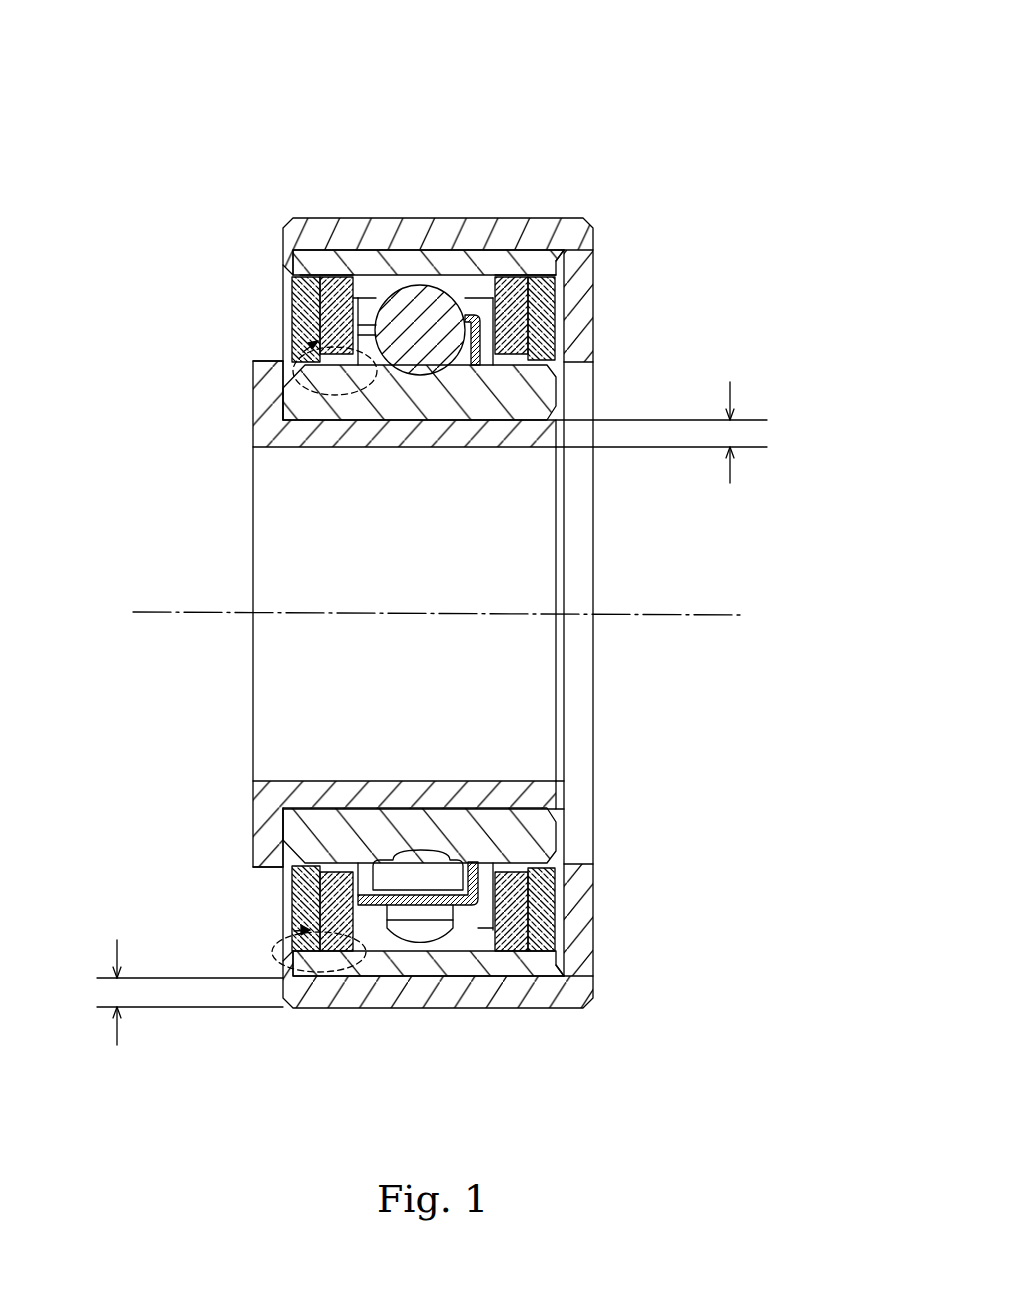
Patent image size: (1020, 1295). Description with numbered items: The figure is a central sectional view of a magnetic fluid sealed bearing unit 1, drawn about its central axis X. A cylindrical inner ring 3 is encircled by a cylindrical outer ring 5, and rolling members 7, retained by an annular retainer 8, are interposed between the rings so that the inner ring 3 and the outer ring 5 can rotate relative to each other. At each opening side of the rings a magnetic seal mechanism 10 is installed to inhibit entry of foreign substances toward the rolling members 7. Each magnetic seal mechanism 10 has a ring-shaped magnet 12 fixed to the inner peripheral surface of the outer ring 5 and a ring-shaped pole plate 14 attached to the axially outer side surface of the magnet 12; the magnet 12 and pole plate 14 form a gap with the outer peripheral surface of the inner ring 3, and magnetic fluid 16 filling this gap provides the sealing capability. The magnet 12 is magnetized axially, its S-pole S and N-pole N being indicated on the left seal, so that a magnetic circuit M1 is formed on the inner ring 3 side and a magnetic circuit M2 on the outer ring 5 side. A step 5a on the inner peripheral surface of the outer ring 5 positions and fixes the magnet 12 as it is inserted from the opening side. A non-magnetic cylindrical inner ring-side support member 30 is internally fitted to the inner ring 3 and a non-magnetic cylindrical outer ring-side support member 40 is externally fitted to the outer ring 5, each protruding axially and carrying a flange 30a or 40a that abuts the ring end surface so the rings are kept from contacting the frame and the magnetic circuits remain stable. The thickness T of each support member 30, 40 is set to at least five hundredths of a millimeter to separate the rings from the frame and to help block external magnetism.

The magnetic fluid sealed bearing unit 1 is at (480, 115).
The inner ring 3 is at (540, 400).
The outer ring 5 is at (458, 262).
The step 5a is at (372, 292).
The rolling member 7 is at (420, 313).
The retainer 8 is at (418, 905).
The magnetic seal mechanism 10 is at (330, 272).
The magnet 12 is at (530, 298).
The pole plate 14 is at (298, 320).
The magnetic fluid 16 is at (295, 858).
The inner ring-side support member 30 is at (492, 435).
The flange 30a is at (268, 400).
The outer ring-side support member 40 is at (467, 998).
The flange 40a is at (586, 262).
The N-pole N is at (358, 296).
The S-pole S is at (305, 297).
The magnetic circuit M1 is at (353, 396).
The magnetic circuit M2 is at (274, 952).
The thickness T is at (422, 712).
The axis X is at (452, 616).